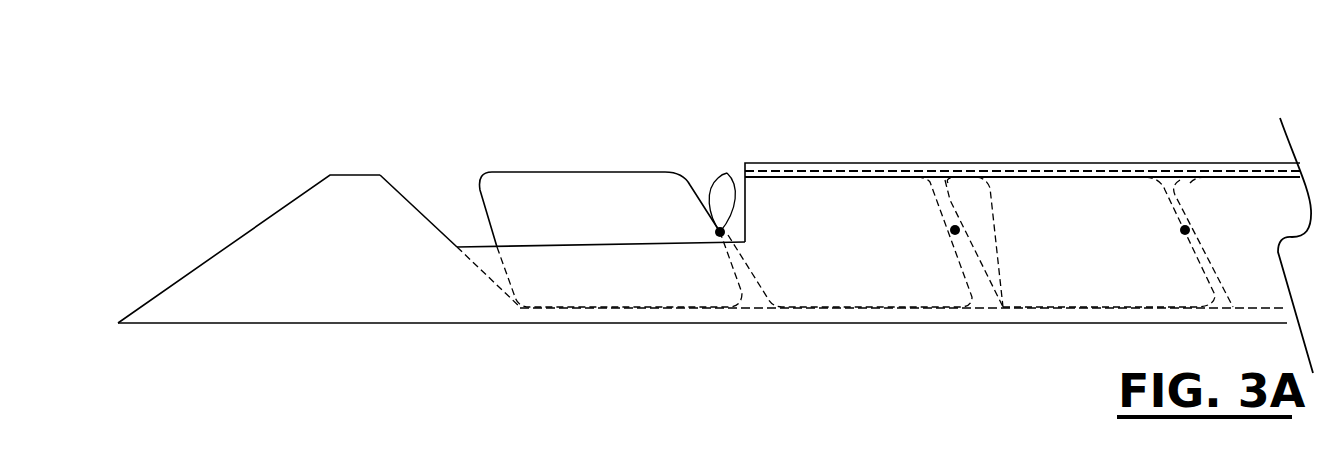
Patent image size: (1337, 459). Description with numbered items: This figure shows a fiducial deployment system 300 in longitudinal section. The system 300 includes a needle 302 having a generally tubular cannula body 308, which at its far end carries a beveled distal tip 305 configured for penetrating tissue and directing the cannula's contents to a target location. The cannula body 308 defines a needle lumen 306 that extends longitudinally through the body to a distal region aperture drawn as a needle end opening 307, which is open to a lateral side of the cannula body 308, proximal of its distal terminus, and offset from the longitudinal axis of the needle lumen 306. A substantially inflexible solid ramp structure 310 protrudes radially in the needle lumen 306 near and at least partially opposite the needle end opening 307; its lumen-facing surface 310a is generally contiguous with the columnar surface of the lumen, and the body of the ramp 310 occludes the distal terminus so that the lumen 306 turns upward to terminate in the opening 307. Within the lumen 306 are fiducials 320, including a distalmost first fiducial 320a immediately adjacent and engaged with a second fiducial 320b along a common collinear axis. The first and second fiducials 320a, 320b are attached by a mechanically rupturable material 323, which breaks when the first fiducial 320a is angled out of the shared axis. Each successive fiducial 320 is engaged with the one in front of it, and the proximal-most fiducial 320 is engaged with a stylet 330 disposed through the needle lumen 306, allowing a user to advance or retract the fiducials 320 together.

The fiducial deployment system 300 is at (948, 78).
The needle 302 is at (1117, 162).
The beveled distal tip 305 is at (231, 224).
The needle lumen 306 is at (945, 180).
The needle end opening 307 is at (477, 159).
The cannula body 308 is at (993, 318).
The ramp structure 310 is at (413, 255).
The lumen-facing surface 310a is at (413, 197).
The fiducials 320 is at (1086, 283).
The first fiducial 320a is at (555, 183).
The second fiducial 320b is at (772, 190).
The rupturable material 323 is at (722, 176).
The stylet 330 is at (1220, 197).